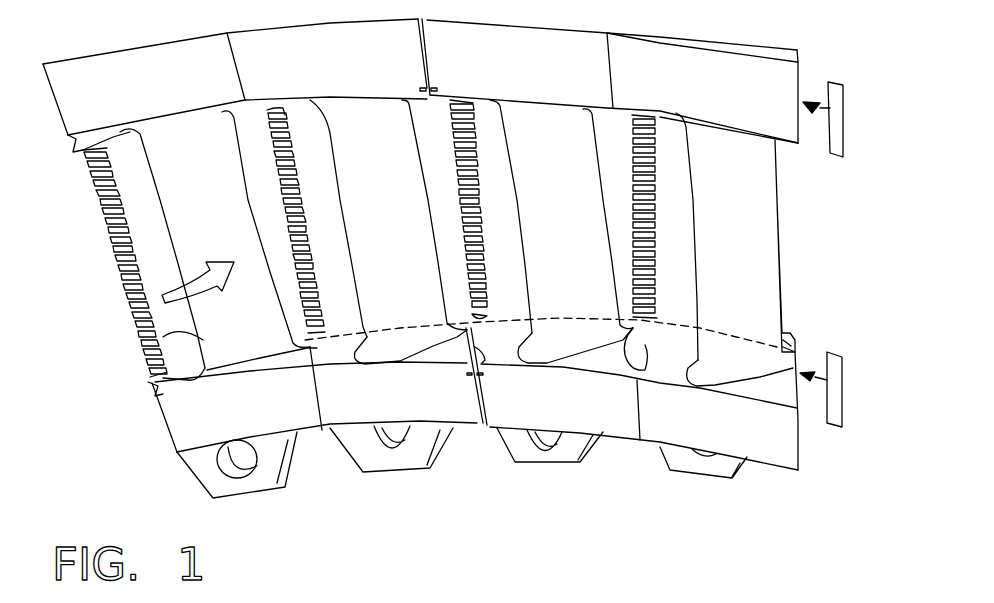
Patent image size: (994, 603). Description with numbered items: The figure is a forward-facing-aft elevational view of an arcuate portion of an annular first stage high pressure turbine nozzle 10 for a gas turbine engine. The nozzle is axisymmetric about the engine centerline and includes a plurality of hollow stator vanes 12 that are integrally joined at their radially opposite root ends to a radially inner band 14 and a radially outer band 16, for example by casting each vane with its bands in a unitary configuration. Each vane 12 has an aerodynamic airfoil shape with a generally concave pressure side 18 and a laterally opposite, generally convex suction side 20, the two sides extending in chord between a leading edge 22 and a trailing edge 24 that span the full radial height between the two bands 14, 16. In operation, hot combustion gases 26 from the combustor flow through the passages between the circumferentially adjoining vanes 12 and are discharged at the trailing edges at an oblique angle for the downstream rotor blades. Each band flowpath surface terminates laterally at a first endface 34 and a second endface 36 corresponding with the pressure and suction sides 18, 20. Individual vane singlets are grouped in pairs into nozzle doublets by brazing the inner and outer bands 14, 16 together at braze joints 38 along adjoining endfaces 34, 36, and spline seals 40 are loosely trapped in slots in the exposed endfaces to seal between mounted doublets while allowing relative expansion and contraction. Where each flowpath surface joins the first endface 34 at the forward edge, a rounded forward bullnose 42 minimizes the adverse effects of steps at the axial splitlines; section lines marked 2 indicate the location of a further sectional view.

The first stage high pressure turbine nozzle 10 is at (106, 318).
The hollow stator vane 12 is at (748, 208).
The inner band 14 is at (155, 415).
The outer band 16 is at (54, 99).
The pressure side 18 is at (160, 236).
The suction side 20 is at (220, 204).
The leading edge 22 is at (147, 353).
The trailing edge 24 is at (97, 183).
The combustion gases 26 is at (200, 292).
The first endface 34 is at (623, 360).
The second endface 36 is at (800, 400).
The braze joint 38 is at (238, 72).
The spline seal 40 is at (842, 82).
The forward bullnose 42 is at (73, 140).
The section line 2 is at (433, 190).